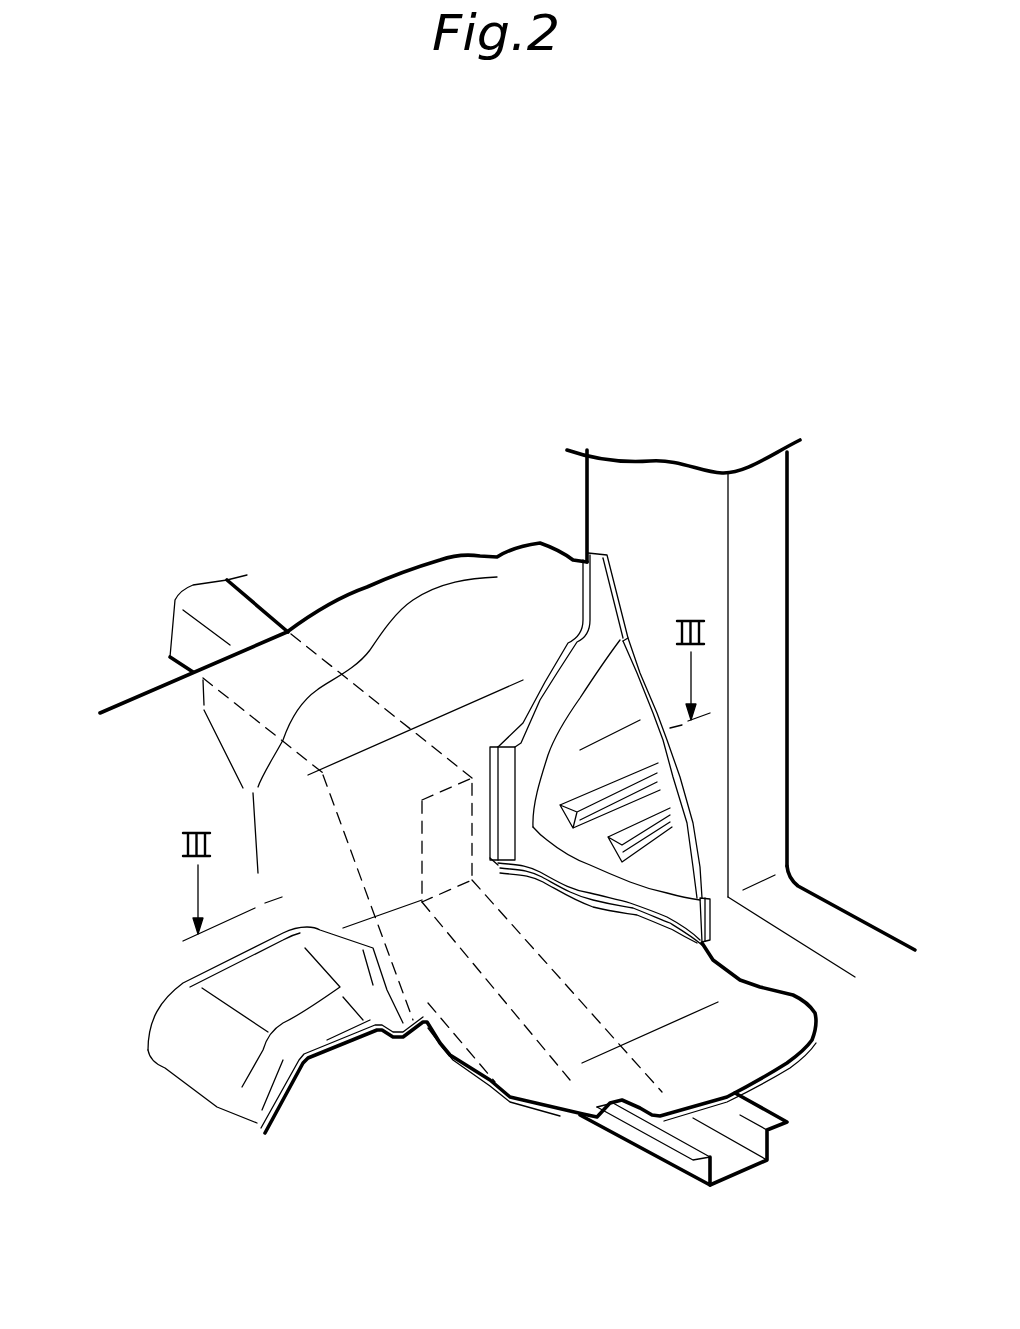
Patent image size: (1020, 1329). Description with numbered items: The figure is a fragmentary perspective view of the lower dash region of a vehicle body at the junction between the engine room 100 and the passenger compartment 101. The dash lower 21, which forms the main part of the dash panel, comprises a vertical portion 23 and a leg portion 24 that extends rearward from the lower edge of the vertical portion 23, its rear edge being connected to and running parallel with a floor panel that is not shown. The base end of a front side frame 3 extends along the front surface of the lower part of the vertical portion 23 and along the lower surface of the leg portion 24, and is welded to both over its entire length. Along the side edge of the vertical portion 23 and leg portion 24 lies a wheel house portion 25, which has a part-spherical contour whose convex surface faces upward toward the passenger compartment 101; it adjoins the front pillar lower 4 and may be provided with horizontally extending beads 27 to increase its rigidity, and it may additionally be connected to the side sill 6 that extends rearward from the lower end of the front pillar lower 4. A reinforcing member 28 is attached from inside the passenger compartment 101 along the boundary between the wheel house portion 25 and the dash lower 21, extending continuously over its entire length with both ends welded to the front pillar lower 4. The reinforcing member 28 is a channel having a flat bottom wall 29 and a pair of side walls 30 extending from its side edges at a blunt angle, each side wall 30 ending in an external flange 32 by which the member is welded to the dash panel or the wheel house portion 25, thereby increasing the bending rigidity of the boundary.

The engine room 100 is at (115, 597).
The passenger compartment 101 is at (179, 794).
The front side frame 3 is at (240, 616).
The front pillar lower 4 is at (780, 523).
The side sill 6 is at (830, 927).
The dash lower 21 is at (473, 513).
The vertical portion 23 is at (387, 587).
The leg portion 24 is at (483, 1072).
The wheel house portion 25 is at (620, 697).
The beads 27 is at (657, 820).
The reinforcing member 28 is at (648, 907).
The bottom wall 29 is at (592, 880).
The side wall 30 is at (503, 762).
The external flange 32 is at (577, 637).